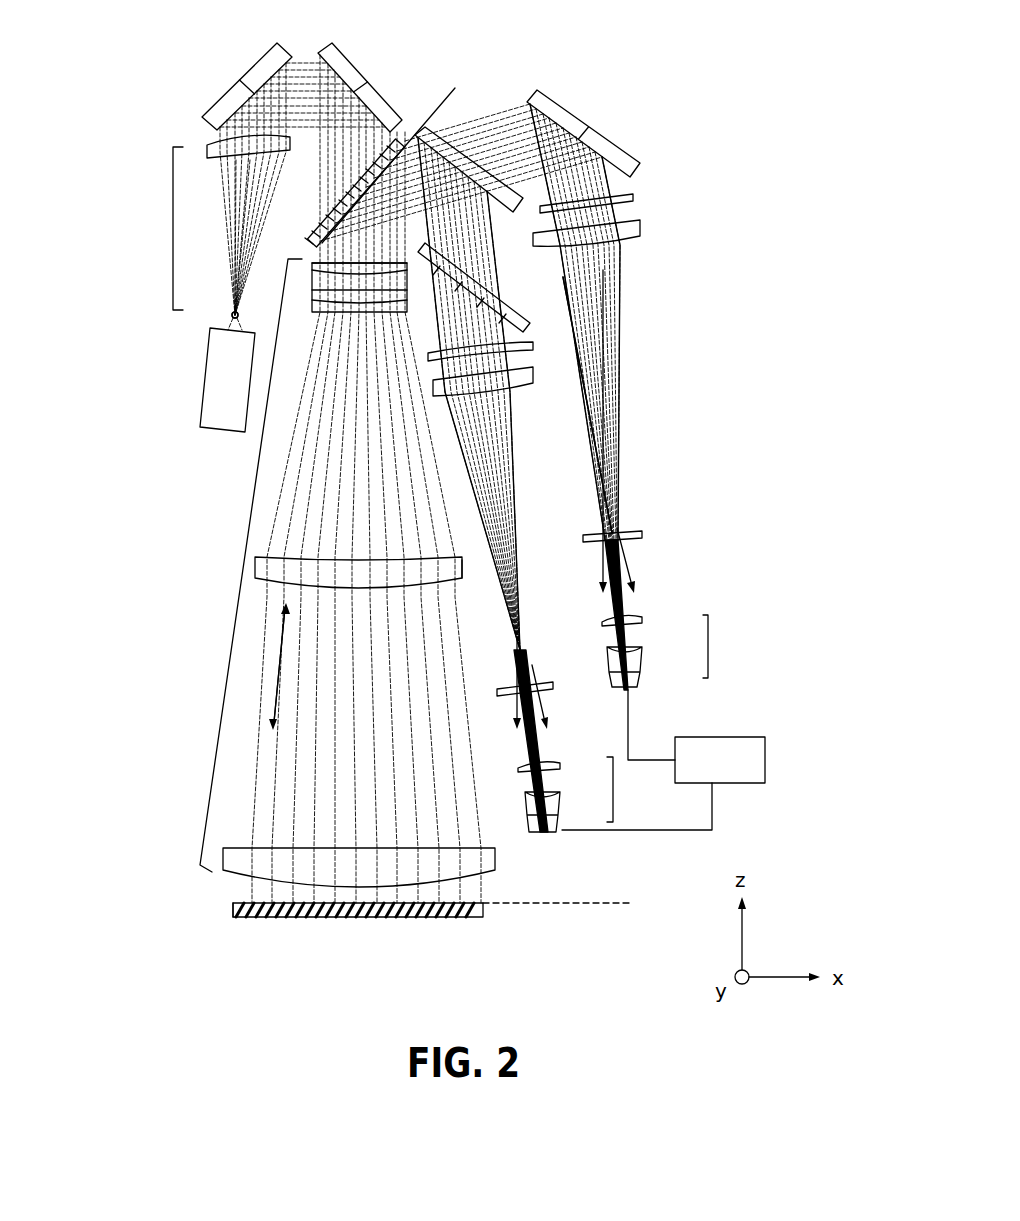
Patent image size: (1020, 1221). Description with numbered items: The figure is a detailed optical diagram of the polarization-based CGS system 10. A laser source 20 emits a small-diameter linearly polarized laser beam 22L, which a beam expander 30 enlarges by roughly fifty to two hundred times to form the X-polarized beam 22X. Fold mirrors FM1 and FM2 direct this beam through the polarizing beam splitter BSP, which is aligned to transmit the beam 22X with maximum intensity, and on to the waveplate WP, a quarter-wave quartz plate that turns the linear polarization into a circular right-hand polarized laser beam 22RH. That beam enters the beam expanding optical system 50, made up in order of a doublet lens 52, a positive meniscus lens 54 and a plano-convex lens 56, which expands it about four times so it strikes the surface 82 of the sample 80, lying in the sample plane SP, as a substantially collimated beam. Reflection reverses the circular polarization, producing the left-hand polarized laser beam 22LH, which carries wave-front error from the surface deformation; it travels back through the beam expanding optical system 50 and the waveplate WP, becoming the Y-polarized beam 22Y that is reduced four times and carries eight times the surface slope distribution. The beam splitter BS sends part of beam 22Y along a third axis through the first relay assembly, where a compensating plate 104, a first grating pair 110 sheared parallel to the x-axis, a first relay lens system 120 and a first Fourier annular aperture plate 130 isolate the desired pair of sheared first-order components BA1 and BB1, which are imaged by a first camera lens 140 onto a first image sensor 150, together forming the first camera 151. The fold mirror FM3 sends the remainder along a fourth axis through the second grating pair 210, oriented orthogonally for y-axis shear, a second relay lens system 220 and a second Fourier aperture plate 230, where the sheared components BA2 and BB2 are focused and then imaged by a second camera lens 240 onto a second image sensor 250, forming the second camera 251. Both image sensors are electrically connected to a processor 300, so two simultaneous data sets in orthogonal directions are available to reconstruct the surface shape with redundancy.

The polarization-based CGS system 10 is at (148, 58).
The fold mirror FM1 is at (238, 82).
The fold mirror FM2 is at (352, 62).
The fold mirror FM3 is at (573, 110).
The polarizing beam splitter BSP is at (455, 88).
The second beam splitter BS is at (422, 130).
The linearly polarized laser beam 22Y is at (514, 105).
The second grating pair 210 is at (633, 197).
The second relay lens system 220 is at (640, 228).
The waveplate WP is at (318, 262).
The doublet lens 52 is at (313, 302).
The beam expander 30 is at (173, 229).
The linearly polarized laser beam 22X is at (225, 228).
The linearly polarized laser beam 22L is at (206, 321).
The laser source 20 is at (200, 378).
The compensating plate 104 is at (513, 292).
The first grating pair 110 is at (553, 341).
The first relay lens system 120 is at (534, 376).
The beam expanding optical system 50 is at (255, 559).
The positive meniscus lens 54 is at (465, 572).
The left-hand polarized laser beam 22LH is at (282, 640).
The right-hand polarized laser beam 22RH is at (274, 708).
The second Fourier aperture plate 230 is at (642, 538).
The diffracted beam component BA2 is at (579, 436).
The diffracted beam component BB2 is at (651, 562).
The second camera lens 240 is at (645, 620).
The second image sensor 250 is at (645, 665).
The second camera 251 is at (708, 647).
The first Fourier annular aperture plate 130 is at (577, 662).
The sheared first order beam component BA1 is at (494, 690).
The sheared first order beam component BB1 is at (562, 702).
The first camera lens 140 is at (560, 766).
The first image sensor 150 is at (560, 805).
The first camera 151 is at (613, 790).
The processor 300 is at (737, 775).
The plano-convex lens 56 is at (496, 860).
The sample plane SP is at (572, 906).
The surface 82 is at (253, 903).
The sample 80 is at (483, 911).